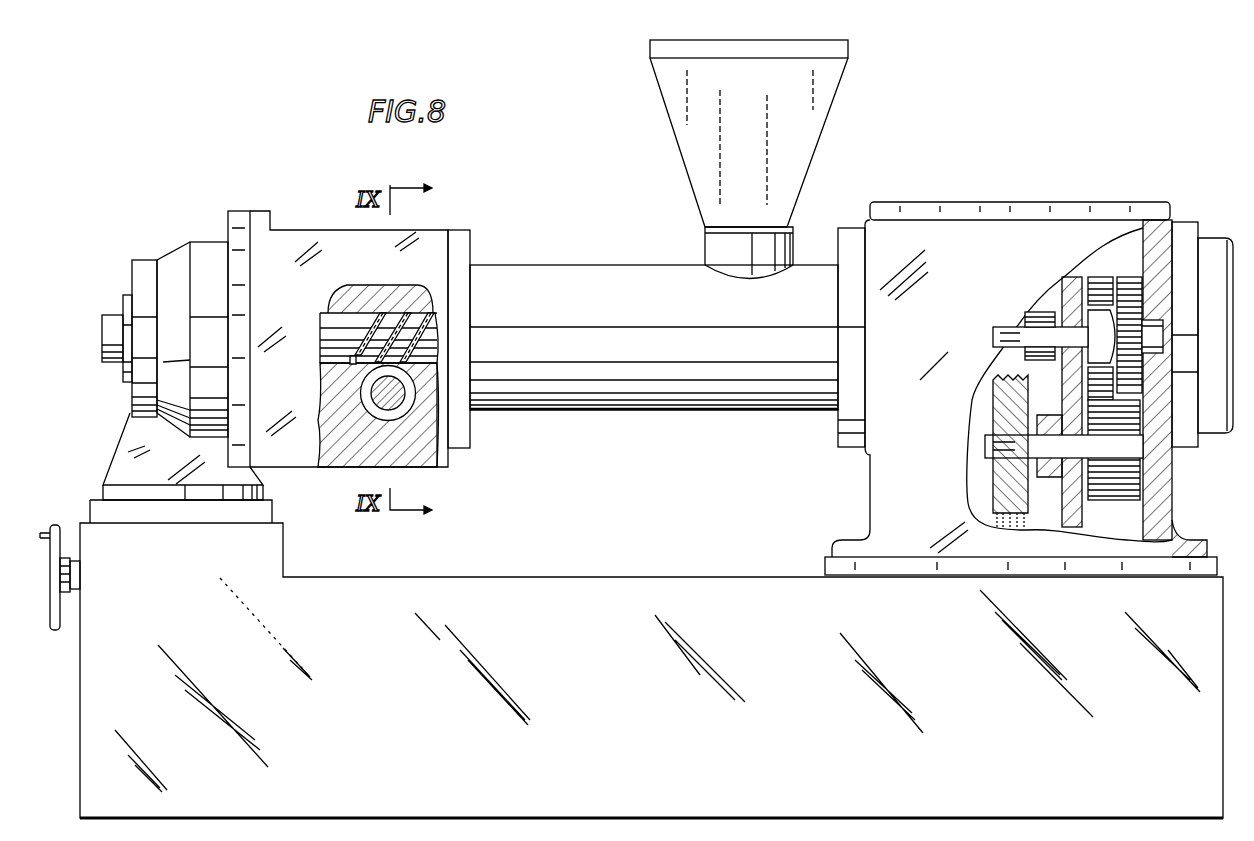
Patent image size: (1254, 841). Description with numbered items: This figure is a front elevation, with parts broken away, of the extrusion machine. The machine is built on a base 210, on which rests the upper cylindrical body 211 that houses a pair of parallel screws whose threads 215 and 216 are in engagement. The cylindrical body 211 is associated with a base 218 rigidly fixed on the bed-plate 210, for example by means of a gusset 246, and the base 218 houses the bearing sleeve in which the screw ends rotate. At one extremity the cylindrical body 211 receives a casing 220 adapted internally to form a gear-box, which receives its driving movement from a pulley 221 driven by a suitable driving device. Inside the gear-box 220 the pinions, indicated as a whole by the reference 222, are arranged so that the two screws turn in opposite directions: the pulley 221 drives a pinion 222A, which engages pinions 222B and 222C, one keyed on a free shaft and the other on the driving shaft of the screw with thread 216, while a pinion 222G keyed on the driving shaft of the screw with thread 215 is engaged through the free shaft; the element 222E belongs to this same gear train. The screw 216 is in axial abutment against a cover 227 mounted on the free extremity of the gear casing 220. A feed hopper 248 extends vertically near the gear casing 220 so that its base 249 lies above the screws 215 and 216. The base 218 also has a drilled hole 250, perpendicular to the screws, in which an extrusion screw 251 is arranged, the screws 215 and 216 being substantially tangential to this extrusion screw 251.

The base 210 is at (624, 578).
The upper cylindrical body 211 is at (588, 264).
The thread 215 is at (427, 327).
The thread 216 is at (459, 328).
The base 218 is at (297, 268).
The casing 220 is at (952, 245).
The pulley 221 is at (993, 477).
The pinions 222 is at (1093, 513).
The pinion 222A is at (1123, 487).
The pinion 222B is at (1102, 277).
The pinion 222C is at (1124, 277).
The gear 222E is at (1040, 318).
The pinion 222G is at (1045, 312).
The cover 227 is at (1208, 248).
The gusset 246 is at (128, 447).
The feed hopper 248 is at (827, 92).
The base of feed hopper 249 is at (728, 260).
The drilled hole 250 is at (417, 381).
The extrusion screw 251 is at (380, 408).